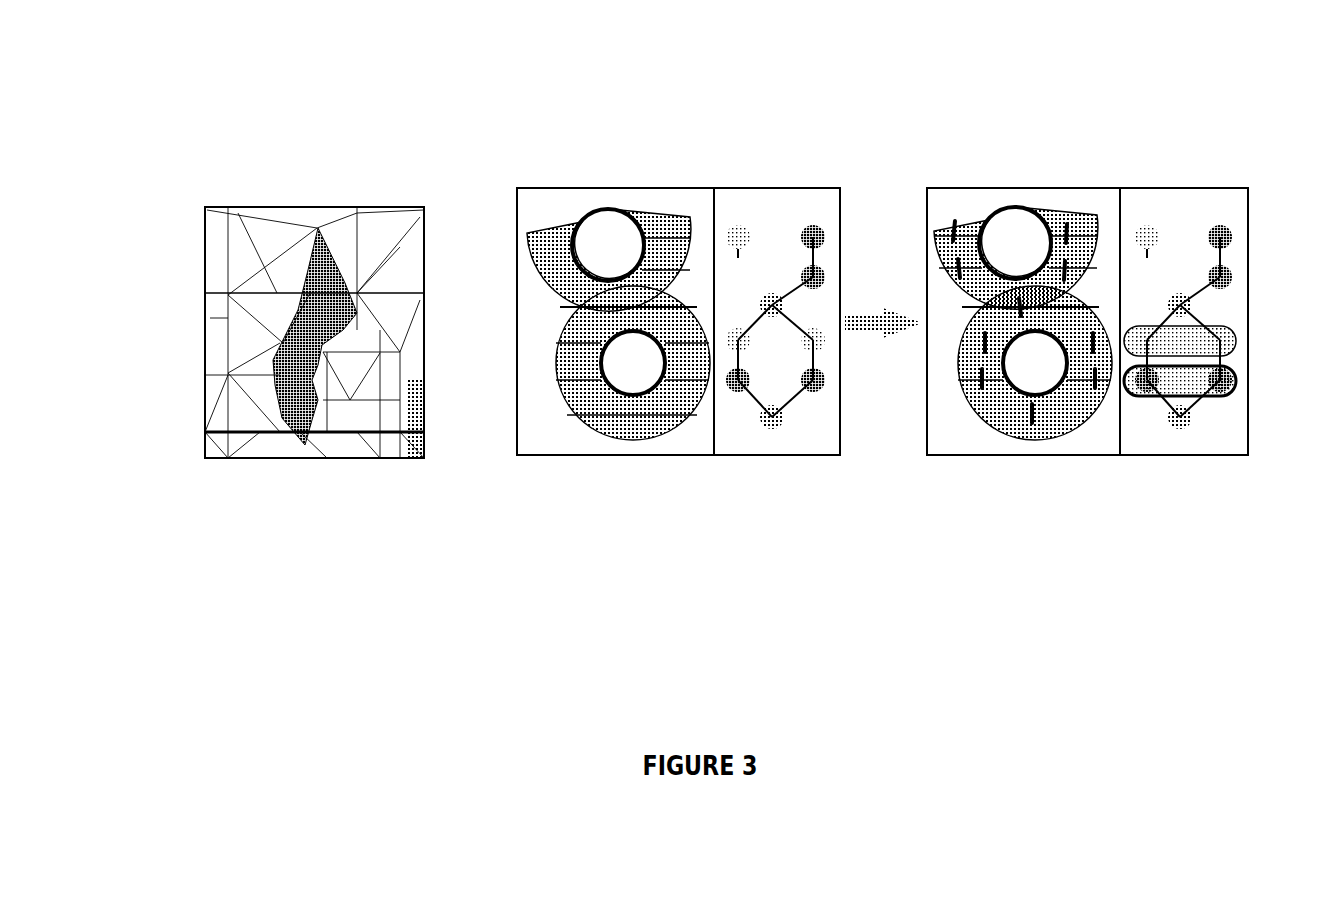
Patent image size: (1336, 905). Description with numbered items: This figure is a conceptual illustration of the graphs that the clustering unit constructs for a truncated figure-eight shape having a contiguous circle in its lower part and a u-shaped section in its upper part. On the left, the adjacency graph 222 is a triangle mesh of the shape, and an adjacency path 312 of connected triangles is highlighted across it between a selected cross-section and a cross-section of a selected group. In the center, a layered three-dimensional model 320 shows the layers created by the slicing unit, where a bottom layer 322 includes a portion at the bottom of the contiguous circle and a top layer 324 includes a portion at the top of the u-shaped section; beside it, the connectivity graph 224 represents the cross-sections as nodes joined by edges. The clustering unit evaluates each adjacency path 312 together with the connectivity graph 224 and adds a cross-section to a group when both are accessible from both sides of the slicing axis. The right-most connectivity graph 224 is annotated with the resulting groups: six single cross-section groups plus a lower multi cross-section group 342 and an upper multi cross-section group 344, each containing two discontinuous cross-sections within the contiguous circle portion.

The adjacency path 312 is at (234, 402).
The adjacency graph 222 is at (268, 415).
The top layer 324 is at (556, 228).
The bottom layer 322 is at (635, 425).
The layered 3D model 320 is at (671, 327).
The connectivity graph 224 is at (745, 187).
The lower multi cross-section group 342 is at (1149, 493).
The upper multi cross-section group 344 is at (1200, 345).